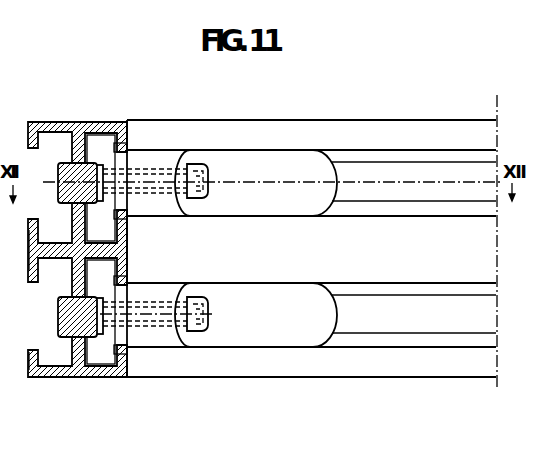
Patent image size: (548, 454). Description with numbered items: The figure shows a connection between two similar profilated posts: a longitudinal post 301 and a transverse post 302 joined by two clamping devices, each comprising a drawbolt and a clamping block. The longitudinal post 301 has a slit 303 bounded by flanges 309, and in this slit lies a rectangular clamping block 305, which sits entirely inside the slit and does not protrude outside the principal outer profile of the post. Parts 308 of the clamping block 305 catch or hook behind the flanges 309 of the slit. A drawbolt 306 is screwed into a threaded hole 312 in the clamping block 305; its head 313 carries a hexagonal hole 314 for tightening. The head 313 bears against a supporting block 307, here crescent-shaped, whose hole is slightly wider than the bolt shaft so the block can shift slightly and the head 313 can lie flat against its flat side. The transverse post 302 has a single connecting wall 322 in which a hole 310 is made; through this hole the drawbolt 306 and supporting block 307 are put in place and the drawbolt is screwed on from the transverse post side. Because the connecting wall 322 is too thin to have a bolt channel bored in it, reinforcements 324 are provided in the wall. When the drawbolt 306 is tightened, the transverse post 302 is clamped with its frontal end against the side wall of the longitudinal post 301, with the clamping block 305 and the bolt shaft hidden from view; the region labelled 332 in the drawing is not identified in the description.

The longitudinal post 301 is at (45, 121).
The transverse post 302 is at (312, 133).
The slit 303 is at (50, 227).
The clamping block 305 is at (110, 152).
The drawbolt 306 is at (160, 180).
The supporting block 307 is at (186, 342).
The parts of the clamping block 308 is at (95, 133).
The flanges 309 is at (29, 270).
The hole 310 is at (265, 158).
The hole in the clamping block 312 is at (119, 352).
The head of the drawbolt 313 is at (200, 172).
The hexagonal hole 314 is at (204, 328).
The single connecting wall 322 is at (382, 322).
The reinforcements 324 is at (359, 170).
The lower screw 332 is at (165, 334).